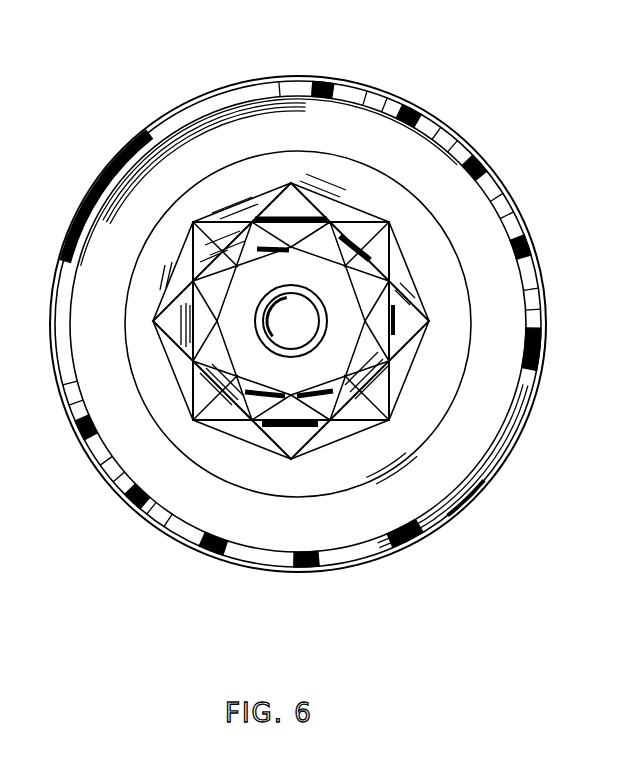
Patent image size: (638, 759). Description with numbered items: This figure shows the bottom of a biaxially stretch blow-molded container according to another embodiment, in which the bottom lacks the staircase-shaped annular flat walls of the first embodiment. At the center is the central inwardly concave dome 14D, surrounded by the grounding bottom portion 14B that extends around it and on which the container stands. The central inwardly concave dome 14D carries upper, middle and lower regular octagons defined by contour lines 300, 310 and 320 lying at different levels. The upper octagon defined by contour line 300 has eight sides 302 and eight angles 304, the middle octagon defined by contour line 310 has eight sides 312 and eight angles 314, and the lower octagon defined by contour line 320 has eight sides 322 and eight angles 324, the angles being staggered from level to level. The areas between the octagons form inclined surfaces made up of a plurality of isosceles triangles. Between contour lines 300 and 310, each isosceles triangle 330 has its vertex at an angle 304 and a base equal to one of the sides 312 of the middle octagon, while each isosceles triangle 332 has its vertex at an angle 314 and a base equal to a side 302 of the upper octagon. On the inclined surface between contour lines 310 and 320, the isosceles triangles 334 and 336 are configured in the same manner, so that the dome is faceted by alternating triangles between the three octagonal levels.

The contour line 300 is at (430, 300).
The side 302 is at (448, 402).
The angle 304 is at (296, 458).
The contour line 310 is at (472, 163).
The side 312 is at (405, 482).
The angle 314 is at (244, 440).
The contour line 320 is at (352, 198).
The side 322 is at (356, 422).
The angle 324 is at (125, 476).
The isosceles triangle 330 is at (297, 233).
The isosceles triangle 332 is at (278, 228).
The isosceles triangle 334 is at (103, 173).
The isosceles triangle 336 is at (233, 238).
The grounding bottom portion 14B is at (187, 480).
The central inwardly concave dome 14D is at (425, 265).